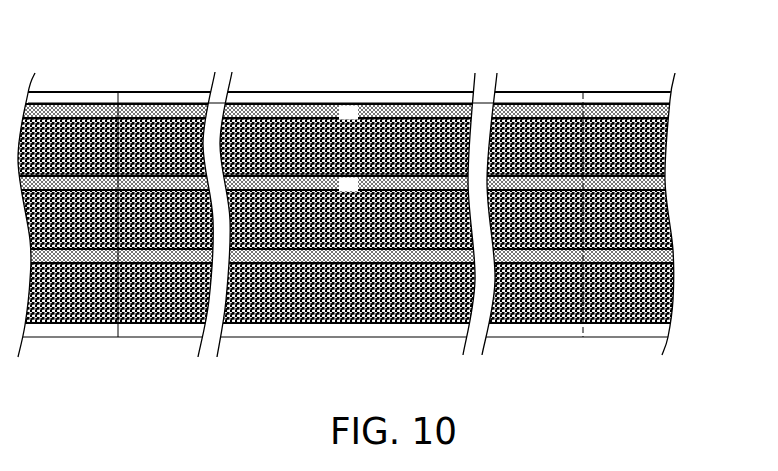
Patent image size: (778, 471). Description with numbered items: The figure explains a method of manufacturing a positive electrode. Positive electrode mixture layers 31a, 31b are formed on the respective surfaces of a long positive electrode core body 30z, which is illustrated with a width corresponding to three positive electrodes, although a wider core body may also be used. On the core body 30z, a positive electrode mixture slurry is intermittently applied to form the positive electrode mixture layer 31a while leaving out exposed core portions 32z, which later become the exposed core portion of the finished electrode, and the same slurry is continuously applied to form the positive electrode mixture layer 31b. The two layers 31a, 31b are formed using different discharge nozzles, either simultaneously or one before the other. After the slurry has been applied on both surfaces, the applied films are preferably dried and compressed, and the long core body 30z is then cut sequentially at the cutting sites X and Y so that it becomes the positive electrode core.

The long positive electrode core body 30z is at (273, 92).
The exposed core portions 32z is at (352, 106).
The positive electrode mixture layer 31a is at (665, 105).
The positive electrode mixture layer 31b is at (658, 152).
The cutting site X is at (90, 102).
The cutting site Y is at (118, 325).